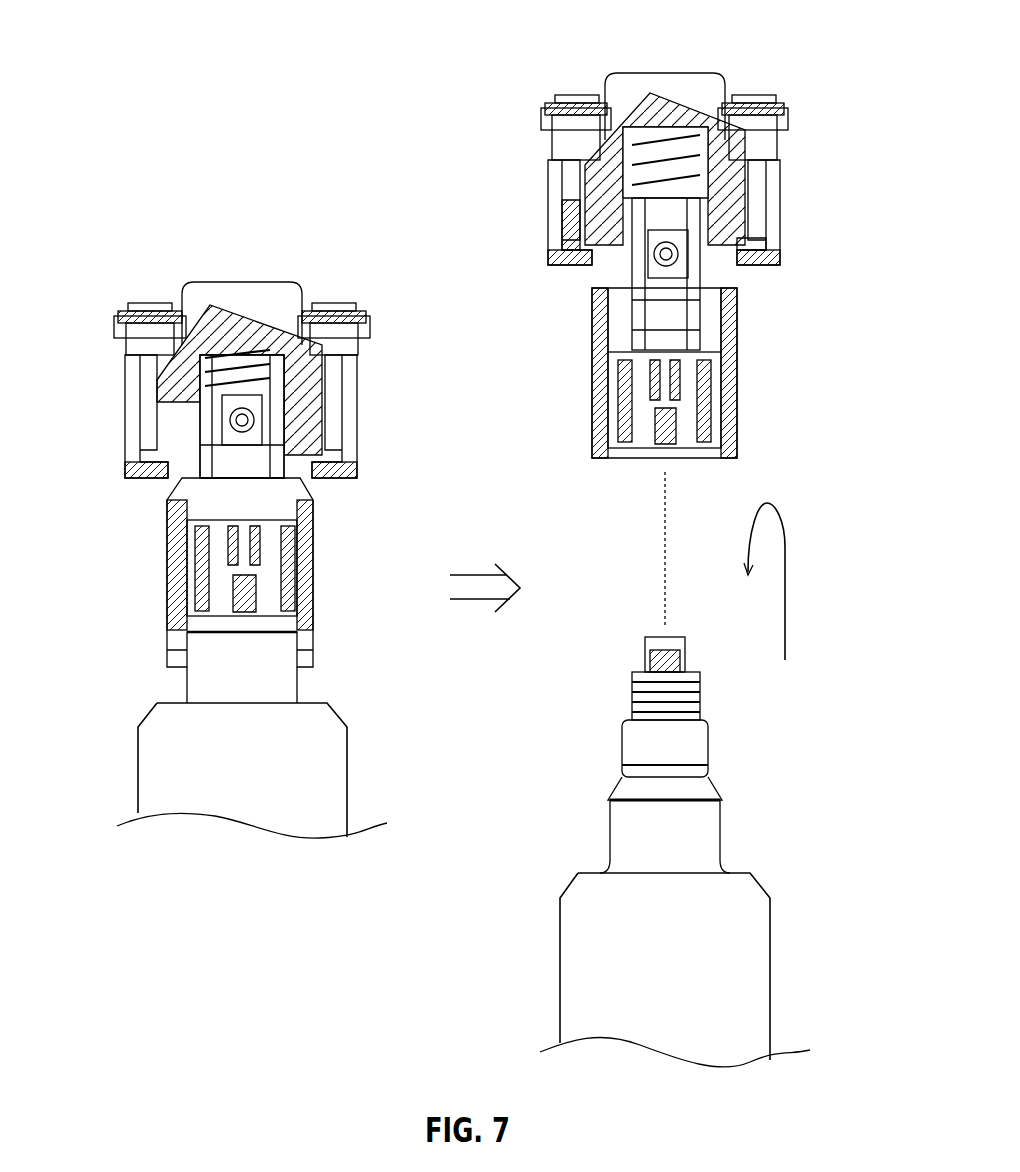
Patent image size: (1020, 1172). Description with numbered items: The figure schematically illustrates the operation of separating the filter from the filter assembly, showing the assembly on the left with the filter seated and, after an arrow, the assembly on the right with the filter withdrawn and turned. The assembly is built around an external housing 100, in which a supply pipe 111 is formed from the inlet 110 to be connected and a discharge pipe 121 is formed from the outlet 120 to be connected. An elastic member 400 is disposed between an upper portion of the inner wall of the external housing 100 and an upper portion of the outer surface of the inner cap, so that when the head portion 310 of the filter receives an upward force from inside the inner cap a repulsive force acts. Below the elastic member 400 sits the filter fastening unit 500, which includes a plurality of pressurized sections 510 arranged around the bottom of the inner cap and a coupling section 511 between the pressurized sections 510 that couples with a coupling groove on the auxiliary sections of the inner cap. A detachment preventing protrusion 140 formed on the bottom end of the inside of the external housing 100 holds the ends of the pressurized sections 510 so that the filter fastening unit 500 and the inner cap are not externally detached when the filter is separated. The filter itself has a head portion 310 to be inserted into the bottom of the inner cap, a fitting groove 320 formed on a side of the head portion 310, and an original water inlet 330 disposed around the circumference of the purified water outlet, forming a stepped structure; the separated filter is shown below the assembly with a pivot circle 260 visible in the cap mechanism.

The external housing 100 is at (345, 390).
The inlet 110 is at (331, 303).
The supply pipe 111 is at (755, 241).
The outlet 120 is at (150, 303).
The discharge pipe 121 is at (615, 243).
The detachment preventing protrusion 140 is at (300, 668).
The pivot pin 260 is at (232, 420).
The head portion 310 is at (200, 686).
The fitting groove 320 is at (626, 778).
The original water inlet 330 is at (642, 664).
The elastic member 400 is at (286, 350).
The filter fastening unit 500 is at (297, 525).
The pressurized sections 510 is at (206, 580).
The coupling section 511 is at (262, 548).